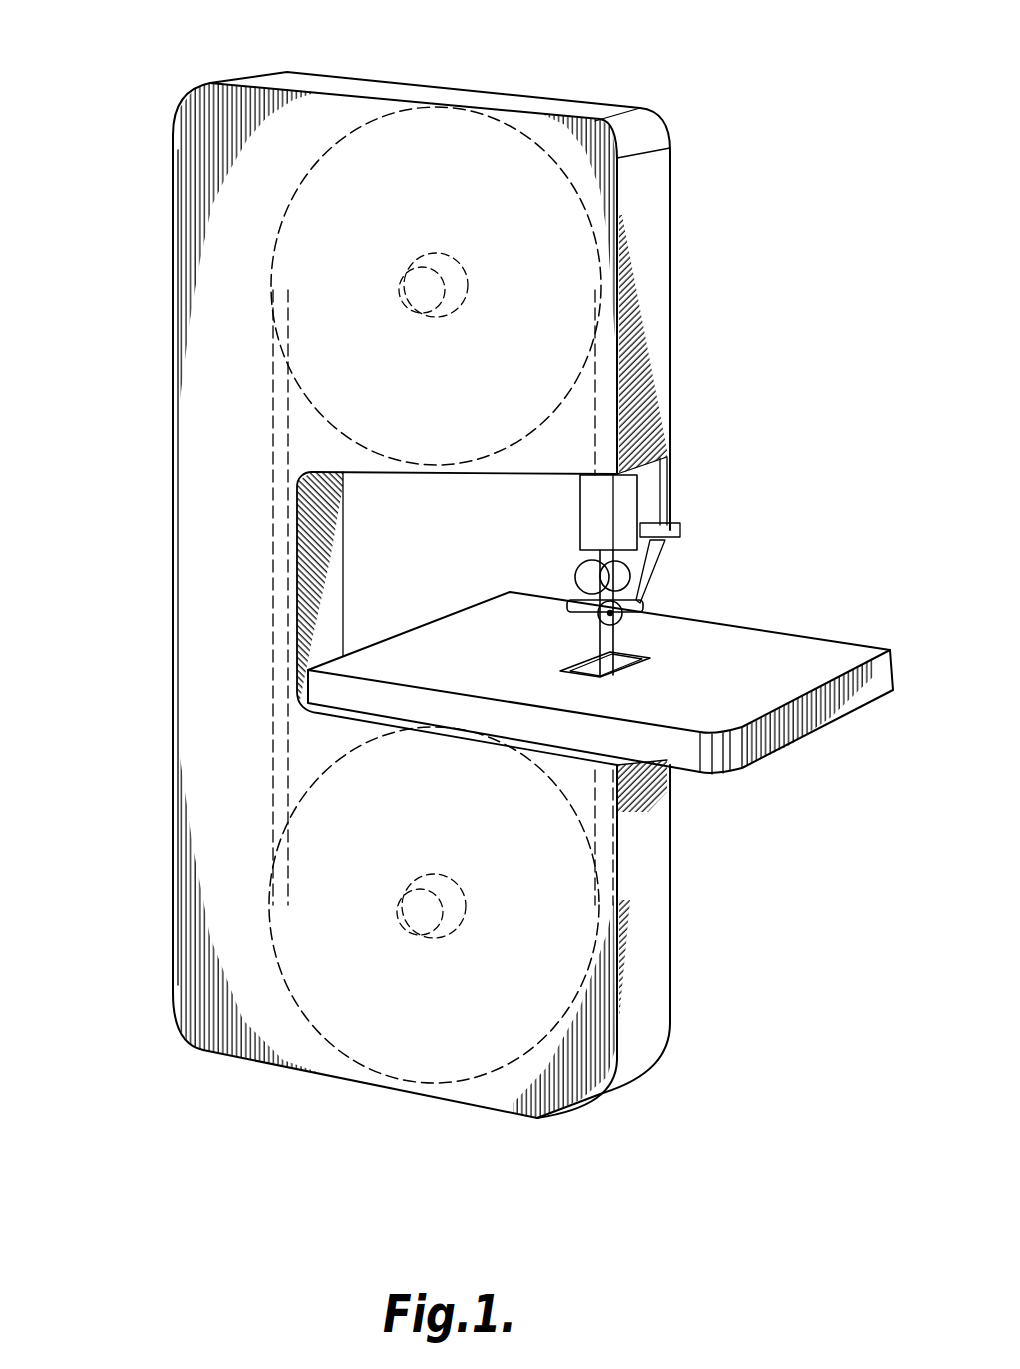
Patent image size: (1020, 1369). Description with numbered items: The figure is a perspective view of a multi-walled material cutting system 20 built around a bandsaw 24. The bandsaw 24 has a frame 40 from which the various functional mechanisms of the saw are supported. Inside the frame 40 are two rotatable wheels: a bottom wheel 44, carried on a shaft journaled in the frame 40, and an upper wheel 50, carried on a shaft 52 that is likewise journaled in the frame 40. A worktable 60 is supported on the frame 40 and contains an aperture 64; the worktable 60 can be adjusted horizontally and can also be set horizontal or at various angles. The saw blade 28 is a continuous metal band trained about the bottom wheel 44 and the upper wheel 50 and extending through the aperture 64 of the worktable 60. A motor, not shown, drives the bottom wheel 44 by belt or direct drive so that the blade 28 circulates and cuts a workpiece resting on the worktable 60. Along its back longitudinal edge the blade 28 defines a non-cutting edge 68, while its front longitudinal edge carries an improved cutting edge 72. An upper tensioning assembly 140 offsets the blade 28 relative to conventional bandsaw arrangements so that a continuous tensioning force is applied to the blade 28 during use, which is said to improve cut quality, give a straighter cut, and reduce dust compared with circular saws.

The multi-walled material cutting system 20 is at (798, 357).
The bandsaw 24 is at (677, 229).
The saw blade 28 is at (578, 649).
The frame 40 is at (173, 230).
The bottom wheel 44 is at (418, 912).
The upper wheel 50 is at (313, 157).
The shaft 52 is at (420, 290).
The worktable 60 is at (850, 643).
The aperture 64 is at (615, 656).
The non-cutting edge 68 is at (620, 643).
The cutting edge 72 is at (580, 637).
The upper tensioning assembly 140 is at (691, 561).